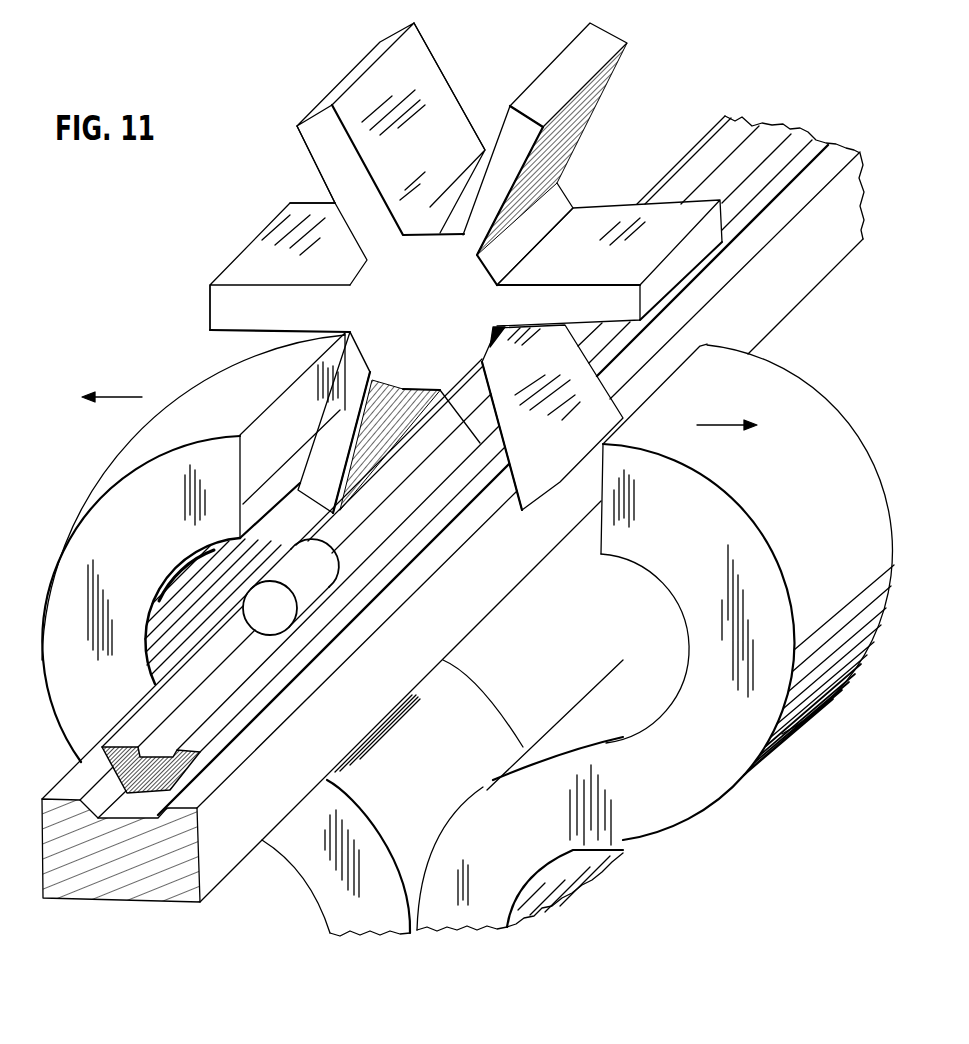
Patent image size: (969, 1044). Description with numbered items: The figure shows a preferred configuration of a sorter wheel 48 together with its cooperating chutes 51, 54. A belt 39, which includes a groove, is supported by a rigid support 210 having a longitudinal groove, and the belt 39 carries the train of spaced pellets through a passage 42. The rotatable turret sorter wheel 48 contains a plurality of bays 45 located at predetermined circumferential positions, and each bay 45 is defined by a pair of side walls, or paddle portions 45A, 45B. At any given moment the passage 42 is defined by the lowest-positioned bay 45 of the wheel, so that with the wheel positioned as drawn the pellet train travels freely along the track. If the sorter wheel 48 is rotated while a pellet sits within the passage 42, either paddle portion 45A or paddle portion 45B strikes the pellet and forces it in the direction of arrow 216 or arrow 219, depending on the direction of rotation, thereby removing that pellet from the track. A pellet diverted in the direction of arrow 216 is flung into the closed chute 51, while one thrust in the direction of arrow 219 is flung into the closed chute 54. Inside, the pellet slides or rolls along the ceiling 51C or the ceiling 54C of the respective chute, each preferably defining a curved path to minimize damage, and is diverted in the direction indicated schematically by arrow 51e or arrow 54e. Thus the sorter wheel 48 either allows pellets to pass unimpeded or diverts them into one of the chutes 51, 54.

The passage 42 is at (453, 527).
The belt 39 is at (103, 763).
The rigid support 210 is at (120, 872).
The bay 45 is at (451, 268).
The paddle portion 45A is at (495, 123).
The paddle portion 45B is at (428, 66).
The sorter wheel 48 is at (451, 268).
The chute 54 is at (226, 656).
The ceiling 54C is at (288, 402).
The arrow 54e is at (333, 978).
The chute 51 is at (655, 666).
The ceiling 51C is at (672, 377).
The arrow 51e is at (483, 988).
The arrow 216 is at (713, 427).
The arrow 219 is at (115, 396).